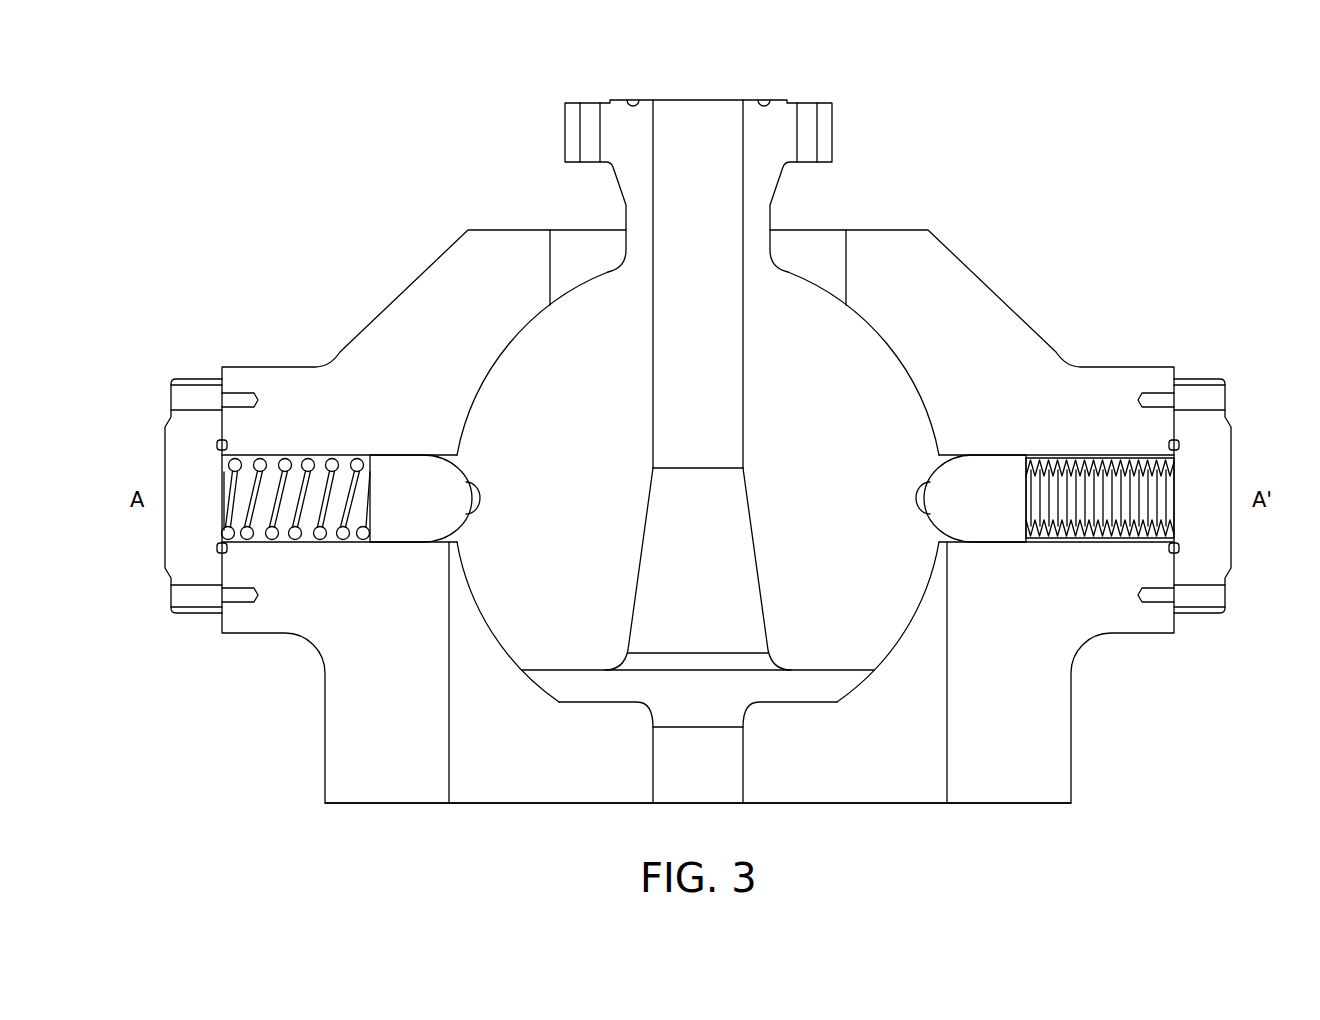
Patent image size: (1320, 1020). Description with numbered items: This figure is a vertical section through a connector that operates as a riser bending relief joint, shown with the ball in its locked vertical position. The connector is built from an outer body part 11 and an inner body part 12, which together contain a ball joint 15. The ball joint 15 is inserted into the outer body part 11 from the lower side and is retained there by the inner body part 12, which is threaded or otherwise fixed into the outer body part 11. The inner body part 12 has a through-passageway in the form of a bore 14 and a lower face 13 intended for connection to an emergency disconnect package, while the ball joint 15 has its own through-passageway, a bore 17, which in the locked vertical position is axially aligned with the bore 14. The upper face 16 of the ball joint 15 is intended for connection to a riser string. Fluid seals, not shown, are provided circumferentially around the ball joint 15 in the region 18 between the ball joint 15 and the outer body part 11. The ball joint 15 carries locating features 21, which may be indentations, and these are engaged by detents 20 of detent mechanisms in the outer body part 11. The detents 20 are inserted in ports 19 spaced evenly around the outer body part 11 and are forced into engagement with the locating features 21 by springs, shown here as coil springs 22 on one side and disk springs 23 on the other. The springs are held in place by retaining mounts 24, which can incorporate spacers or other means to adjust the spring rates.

The outer body part 11 is at (1063, 742).
The inner body part 12 is at (890, 792).
The lower face 13 is at (822, 804).
The bore 14 is at (714, 775).
The ball joint 15 is at (551, 353).
The upper face 16 is at (776, 101).
The bore 17 is at (714, 256).
The region 18 is at (567, 297).
The ports 19 is at (308, 543).
The detents 20 is at (402, 520).
The locating features 21 is at (477, 498).
The coil springs 22 is at (278, 492).
The disk springs 23 is at (1066, 452).
The retaining mounts 24 is at (208, 508).